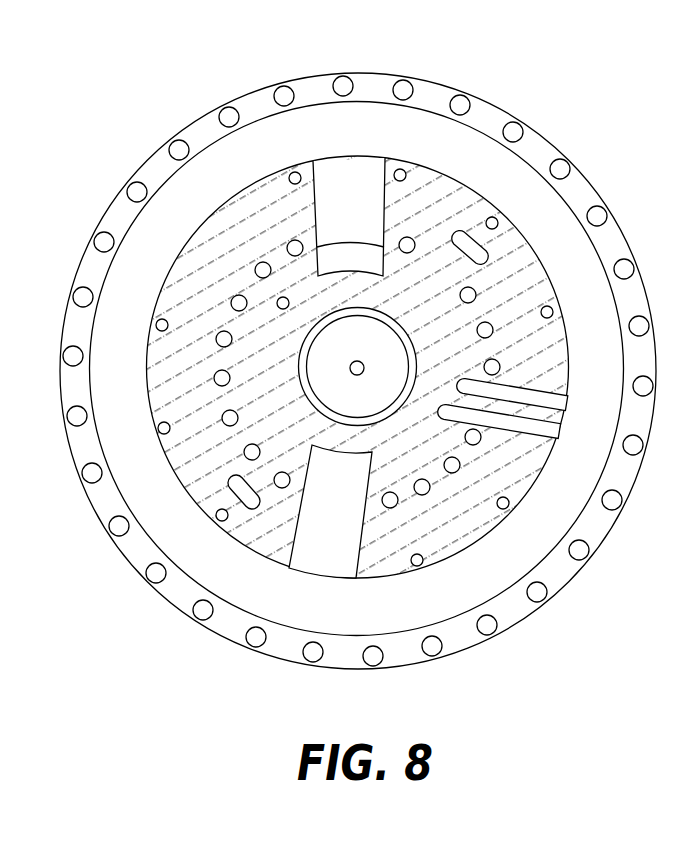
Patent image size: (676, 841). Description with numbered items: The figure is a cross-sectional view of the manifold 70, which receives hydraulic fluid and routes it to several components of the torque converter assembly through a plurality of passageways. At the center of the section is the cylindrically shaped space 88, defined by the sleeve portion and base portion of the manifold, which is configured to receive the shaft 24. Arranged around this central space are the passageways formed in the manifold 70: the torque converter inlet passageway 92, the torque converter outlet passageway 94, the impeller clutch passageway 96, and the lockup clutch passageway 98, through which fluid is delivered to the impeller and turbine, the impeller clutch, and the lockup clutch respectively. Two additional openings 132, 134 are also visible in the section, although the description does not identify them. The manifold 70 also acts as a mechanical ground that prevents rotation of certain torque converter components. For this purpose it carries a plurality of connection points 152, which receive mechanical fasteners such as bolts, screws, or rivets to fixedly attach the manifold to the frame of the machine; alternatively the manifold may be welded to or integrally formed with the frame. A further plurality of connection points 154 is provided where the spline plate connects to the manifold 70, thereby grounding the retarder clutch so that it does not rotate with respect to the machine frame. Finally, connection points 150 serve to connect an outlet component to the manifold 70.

The manifold 70 is at (466, 150).
The shaft 24 is at (350, 351).
The cylindrically shaped space 88 is at (317, 413).
The torque converter inlet passageway 92 is at (328, 562).
The torque converter outlet passageway 94 is at (355, 166).
The impeller clutch passageway 96 is at (532, 438).
The lockup clutch passageway 98 is at (552, 388).
The oblong opening 132 is at (233, 486).
The oblong opening 134 is at (482, 252).
The connection points 150 is at (224, 331).
The connection points 152 is at (294, 172).
The connection points 154 is at (137, 182).